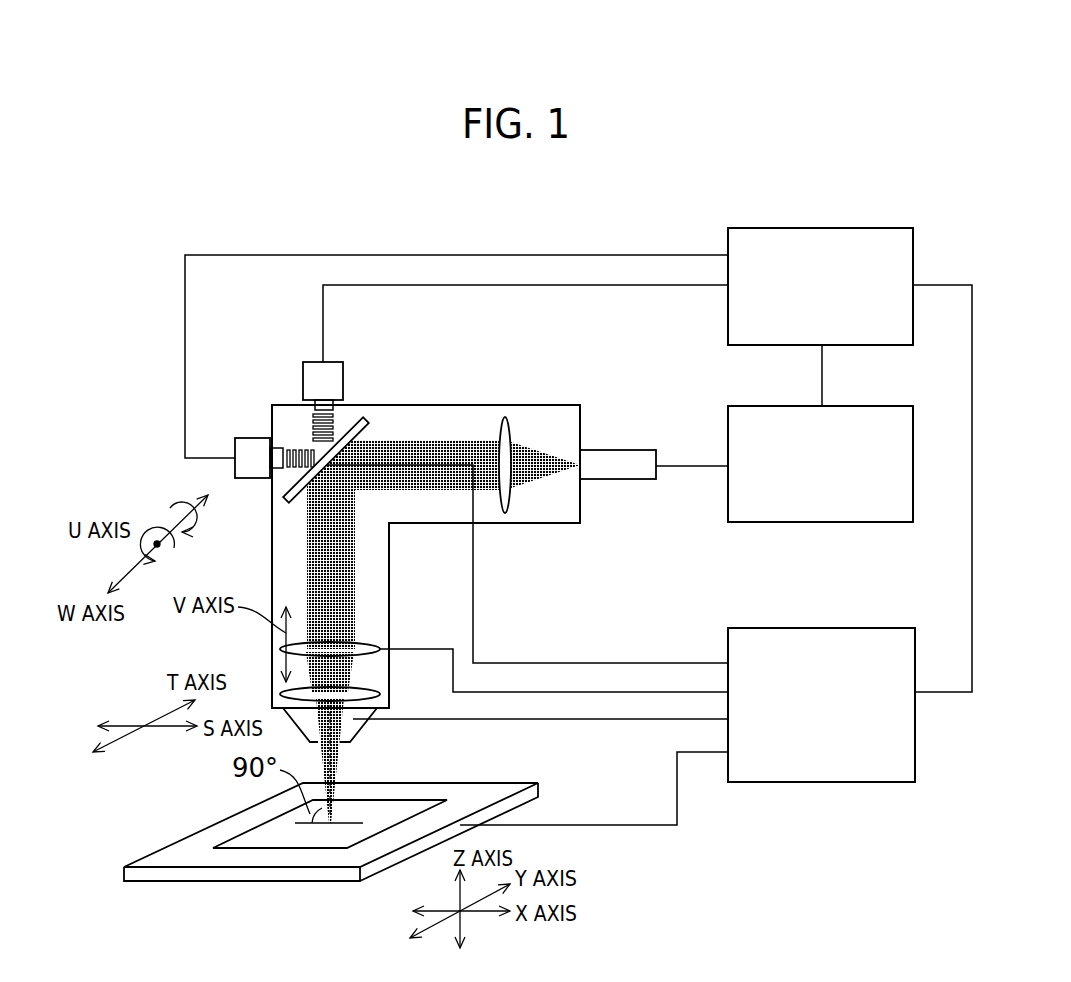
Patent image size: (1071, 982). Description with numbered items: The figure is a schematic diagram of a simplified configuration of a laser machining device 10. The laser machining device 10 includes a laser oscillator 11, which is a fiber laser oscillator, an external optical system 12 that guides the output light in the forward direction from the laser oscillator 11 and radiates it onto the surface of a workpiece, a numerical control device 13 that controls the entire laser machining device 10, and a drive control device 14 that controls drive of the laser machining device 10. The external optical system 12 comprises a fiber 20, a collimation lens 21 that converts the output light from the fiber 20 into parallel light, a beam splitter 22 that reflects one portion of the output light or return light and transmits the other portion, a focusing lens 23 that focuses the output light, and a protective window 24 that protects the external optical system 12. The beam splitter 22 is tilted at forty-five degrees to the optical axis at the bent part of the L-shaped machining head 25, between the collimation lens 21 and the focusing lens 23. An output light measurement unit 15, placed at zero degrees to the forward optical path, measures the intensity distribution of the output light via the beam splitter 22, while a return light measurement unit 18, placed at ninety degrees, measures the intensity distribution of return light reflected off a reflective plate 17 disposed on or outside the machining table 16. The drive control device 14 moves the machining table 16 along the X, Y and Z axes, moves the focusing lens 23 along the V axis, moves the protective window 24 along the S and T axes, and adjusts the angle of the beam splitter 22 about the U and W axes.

The laser machining device 10 is at (152, 338).
The laser oscillator 11 is at (753, 406).
The external optical system 12 is at (456, 572).
The numerical control device 13 is at (863, 228).
The drive control device 14 is at (752, 628).
The output light measurement unit 15 is at (250, 438).
The machining table 16 is at (480, 790).
The reflective plate 17 is at (255, 835).
The return light measurement unit 18 is at (305, 362).
The fiber 20 is at (678, 468).
The collimation lens 21 is at (507, 498).
The beam splitter 22 is at (372, 418).
The focusing lens 23 is at (365, 646).
The protective window 24 is at (355, 690).
The machining head 25 is at (470, 405).